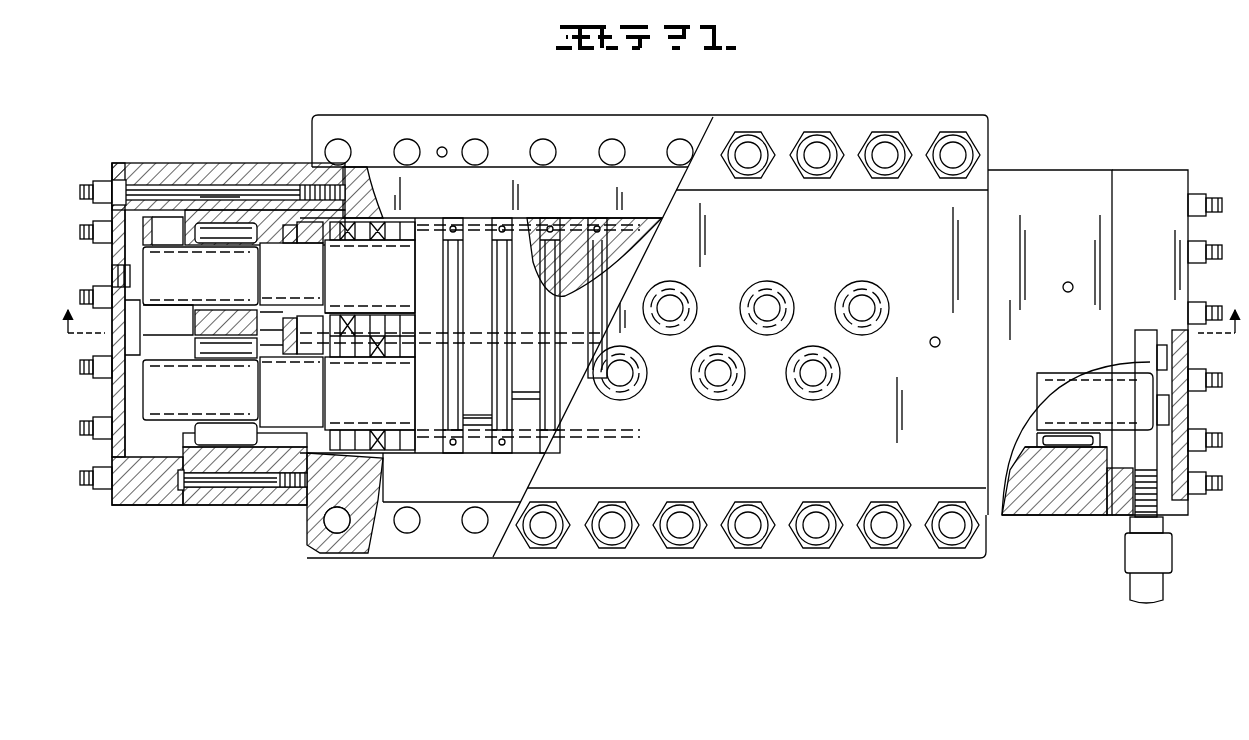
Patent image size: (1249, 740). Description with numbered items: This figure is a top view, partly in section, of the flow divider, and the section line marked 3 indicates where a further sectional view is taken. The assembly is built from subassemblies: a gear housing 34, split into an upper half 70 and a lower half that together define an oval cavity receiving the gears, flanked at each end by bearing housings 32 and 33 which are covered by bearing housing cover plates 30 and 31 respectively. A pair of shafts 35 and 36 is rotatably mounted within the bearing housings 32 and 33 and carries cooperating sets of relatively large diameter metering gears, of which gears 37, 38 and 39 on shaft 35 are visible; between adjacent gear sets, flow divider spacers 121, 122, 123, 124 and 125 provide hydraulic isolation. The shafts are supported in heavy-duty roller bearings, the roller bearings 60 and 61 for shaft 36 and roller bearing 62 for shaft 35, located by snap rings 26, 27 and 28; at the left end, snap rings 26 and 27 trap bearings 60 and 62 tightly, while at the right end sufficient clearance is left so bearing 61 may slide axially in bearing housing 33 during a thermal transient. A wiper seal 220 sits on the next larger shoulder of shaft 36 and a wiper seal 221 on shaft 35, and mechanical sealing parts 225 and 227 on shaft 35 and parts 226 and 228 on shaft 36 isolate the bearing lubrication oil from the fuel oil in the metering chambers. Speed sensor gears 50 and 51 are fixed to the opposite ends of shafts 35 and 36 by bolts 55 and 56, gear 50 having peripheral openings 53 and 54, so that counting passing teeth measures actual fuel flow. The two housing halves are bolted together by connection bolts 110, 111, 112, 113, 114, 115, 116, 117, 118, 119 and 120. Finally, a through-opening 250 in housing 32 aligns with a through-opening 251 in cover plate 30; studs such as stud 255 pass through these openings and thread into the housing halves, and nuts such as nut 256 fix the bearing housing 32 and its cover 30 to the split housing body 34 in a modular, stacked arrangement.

The snap ring 26 is at (184, 441).
The snap ring 27 is at (180, 240).
The snap ring 28 is at (1105, 463).
The bearing housing cover plate 30 is at (152, 162).
The bearing housing cover plate 31 is at (1145, 166).
The bearing housing 32 is at (227, 155).
The bearing housing 33 is at (1040, 166).
The gear housing 34 is at (438, 112).
The shaft 35 is at (285, 287).
The shaft 36 is at (277, 402).
The metering gear 37 is at (442, 301).
The metering gear 38 is at (490, 301).
The metering gear 39 is at (540, 301).
The speed sensor gear 50 is at (200, 320).
The speed sensor gear 51 is at (1145, 365).
The opening 53 is at (152, 334).
The opening 54 is at (150, 226).
The bolt 55 is at (112, 276).
The bolt 56 is at (1173, 408).
The roller bearing 60 is at (226, 437).
The roller bearing 61 is at (1055, 445).
The roller bearing 62 is at (212, 236).
The upper half 70 is at (778, 247).
The connection bolt 110 is at (748, 131).
The connection bolt 111 is at (817, 131).
The connection bolt 112 is at (885, 131).
The connection bolt 113 is at (953, 131).
The connection bolt 114 is at (540, 501).
The connection bolt 115 is at (608, 501).
The connection bolt 116 is at (677, 501).
The connection bolt 117 is at (745, 501).
The connection bolt 118 is at (813, 501).
The connection bolt 119 is at (881, 501).
The connection bolt 120 is at (949, 501).
The flow divider spacer 121 is at (403, 453).
The flow divider spacer 122 is at (453, 420).
The flow divider spacer 123 is at (503, 416).
The flow divider spacer 124 is at (547, 392).
The flow divider spacer 125 is at (597, 291).
The wiper seal 220 is at (262, 350).
The wiper seal 221 is at (286, 232).
The mechanical seal part 225 is at (293, 238).
The mechanical seal part 226 is at (295, 438).
The mechanical seal part 227 is at (368, 318).
The mechanical seal part 228 is at (368, 355).
The through-opening 250 is at (268, 186).
The through-opening 251 is at (162, 186).
The stud 255 is at (234, 196).
The nut 256 is at (100, 178).
The section line 3- 3 is at (653, 308).